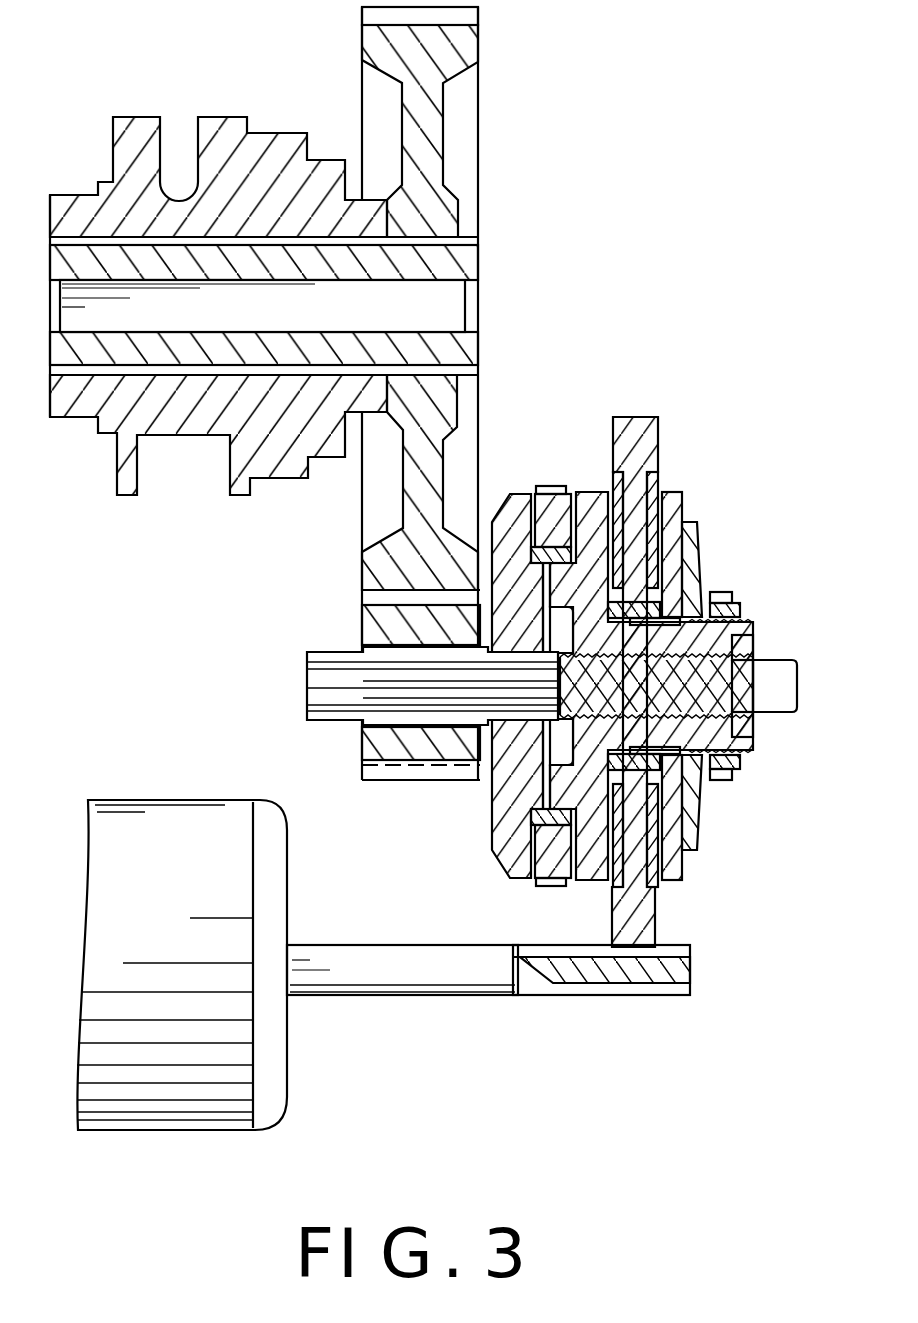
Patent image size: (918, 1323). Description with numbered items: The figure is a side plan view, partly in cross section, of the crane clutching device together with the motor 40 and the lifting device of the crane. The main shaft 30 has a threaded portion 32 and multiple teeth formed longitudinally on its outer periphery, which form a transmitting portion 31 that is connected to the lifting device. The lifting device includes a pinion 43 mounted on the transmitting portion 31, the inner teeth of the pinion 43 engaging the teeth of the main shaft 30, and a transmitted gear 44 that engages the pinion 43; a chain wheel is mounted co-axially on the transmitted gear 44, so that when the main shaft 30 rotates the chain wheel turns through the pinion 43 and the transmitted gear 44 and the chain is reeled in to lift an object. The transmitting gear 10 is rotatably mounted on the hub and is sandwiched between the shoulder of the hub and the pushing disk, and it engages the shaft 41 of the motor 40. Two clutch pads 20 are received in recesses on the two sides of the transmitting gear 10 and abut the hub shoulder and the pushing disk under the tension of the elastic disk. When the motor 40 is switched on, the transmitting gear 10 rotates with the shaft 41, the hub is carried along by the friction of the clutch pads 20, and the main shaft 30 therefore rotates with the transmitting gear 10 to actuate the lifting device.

The transmitting gear 10 is at (648, 453).
The clutch pads 20 is at (605, 478).
The main shaft 30 is at (716, 676).
The transmitting portion 31 is at (450, 713).
The threaded portion 32 is at (697, 707).
The motor 40 is at (224, 1090).
The shaft 41 is at (432, 977).
The pinion 43 is at (400, 747).
The transmitted gear 44 is at (490, 275).